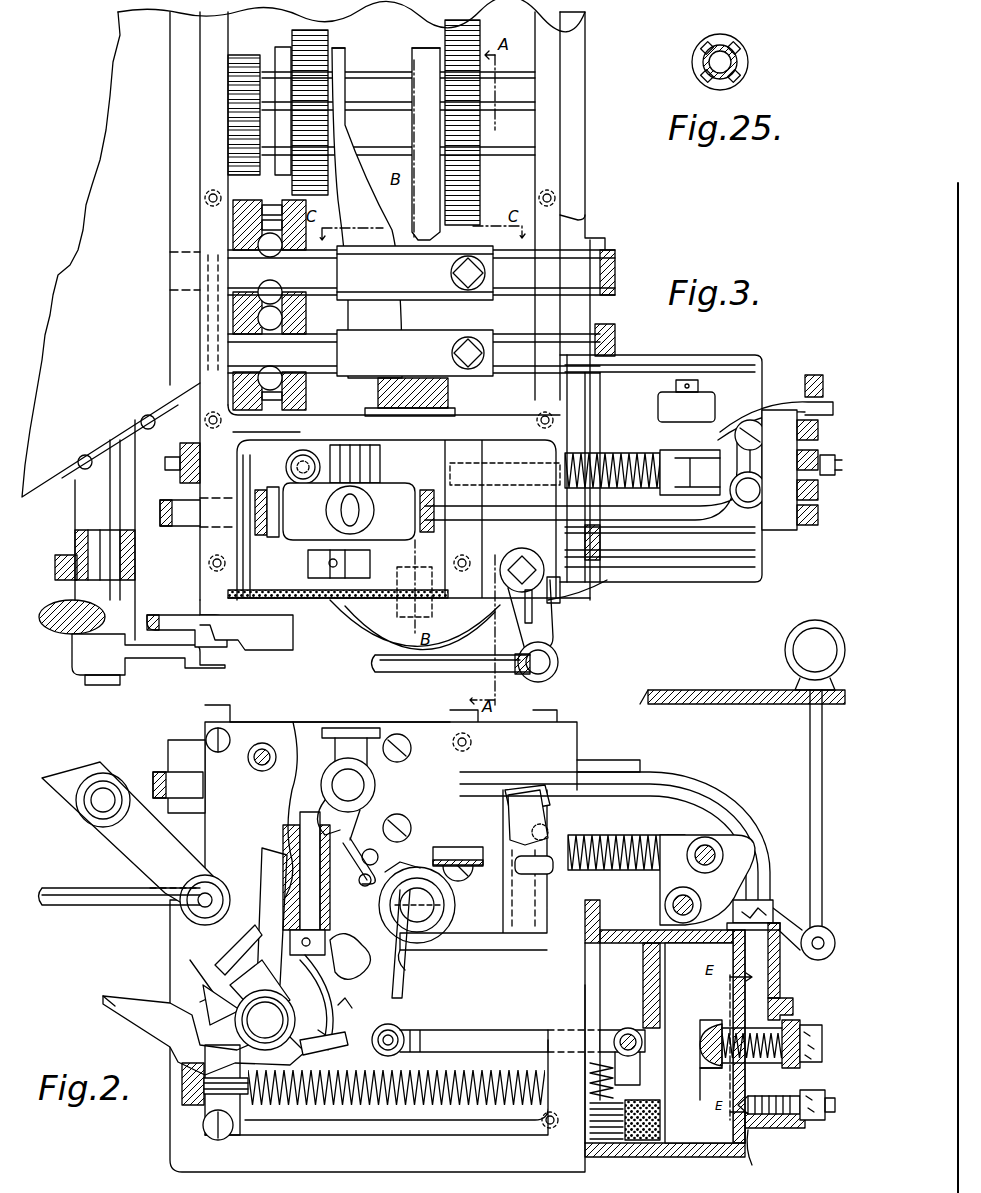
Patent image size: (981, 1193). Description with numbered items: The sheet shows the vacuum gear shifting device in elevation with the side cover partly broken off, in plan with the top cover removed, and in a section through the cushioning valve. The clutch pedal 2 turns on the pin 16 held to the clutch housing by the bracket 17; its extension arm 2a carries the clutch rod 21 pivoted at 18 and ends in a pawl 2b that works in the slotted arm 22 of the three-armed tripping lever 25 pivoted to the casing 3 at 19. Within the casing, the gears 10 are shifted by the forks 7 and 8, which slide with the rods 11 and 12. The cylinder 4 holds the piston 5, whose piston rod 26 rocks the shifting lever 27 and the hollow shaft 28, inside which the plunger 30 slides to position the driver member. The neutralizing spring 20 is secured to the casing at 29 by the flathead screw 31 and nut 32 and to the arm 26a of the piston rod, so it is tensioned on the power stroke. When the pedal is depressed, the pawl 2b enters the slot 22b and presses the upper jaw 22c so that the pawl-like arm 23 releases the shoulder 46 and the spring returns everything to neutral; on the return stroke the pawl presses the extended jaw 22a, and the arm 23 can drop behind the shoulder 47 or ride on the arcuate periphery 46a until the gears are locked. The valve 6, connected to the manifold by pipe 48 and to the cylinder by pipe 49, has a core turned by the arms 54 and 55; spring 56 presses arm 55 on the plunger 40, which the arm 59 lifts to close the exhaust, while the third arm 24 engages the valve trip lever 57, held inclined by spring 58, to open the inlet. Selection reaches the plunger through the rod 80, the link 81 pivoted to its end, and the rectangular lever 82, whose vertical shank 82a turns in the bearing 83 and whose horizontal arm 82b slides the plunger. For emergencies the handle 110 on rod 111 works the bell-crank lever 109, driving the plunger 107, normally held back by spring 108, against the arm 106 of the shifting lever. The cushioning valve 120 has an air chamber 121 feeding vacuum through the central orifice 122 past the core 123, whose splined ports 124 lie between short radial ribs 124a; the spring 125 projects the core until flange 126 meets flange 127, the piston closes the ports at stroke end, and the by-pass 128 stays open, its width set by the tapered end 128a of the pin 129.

In FIG. 3, the clutch pedal 2 is at (38, 614).
In FIG. 2, the clutch pedal 2 is at (48, 800).
In FIG. 3, the extension arm 2a is at (160, 660).
In FIG. 2, the extension arm 2a is at (135, 876).
In FIG. 2, the pawl 2b is at (190, 975).
In FIG. 3, the casing 3 is at (585, 225).
In FIG. 2, the casing 3 is at (282, 722).
In FIG. 3, the cylinder 4 is at (676, 582).
In FIG. 2, the cylinder 4 is at (670, 1160).
In FIG. 2, the piston 5 is at (665, 1050).
In FIG. 3, the valve 6 is at (349, 511).
In FIG. 2, the valve 6 is at (325, 752).
In FIG. 3, the fork 7 is at (360, 200).
In FIG. 3, the fork 8 is at (440, 232).
In FIG. 3, the gears 10 is at (328, 40).
In FIG. 3, the rod 11 is at (615, 272).
In FIG. 3, the rod 12 is at (612, 330).
In FIG. 3, the pin 16 is at (88, 543).
In FIG. 3, the bracket 17 is at (55, 583).
In FIG. 2, the pivot 18 is at (180, 918).
In FIG. 3, the pivot 19 is at (293, 612).
In FIG. 2, the pivot 19 is at (265, 1020).
In FIG. 2, the neutralizing spring 20 is at (322, 1100).
In FIG. 3, the rod 21 is at (165, 615).
In FIG. 2, the rod 21 is at (80, 908).
In FIG. 2, the slotted arm 22 is at (222, 1050).
In FIG. 2, the extended jaw 22a is at (127, 1017).
In FIG. 2, the slot 22b is at (221, 1005).
In FIG. 2, the upper jaw 22c is at (260, 990).
In FIG. 2, the pawl-like arm 23 is at (324, 1043).
In FIG. 2, the third arm 24 is at (272, 916).
In FIG. 2, the three-armed tripping lever 25 is at (250, 945).
In FIG. 2, the piston rod 26 is at (490, 1030).
In FIG. 2, the arm 26a is at (600, 1055).
In FIG. 2, the shifting lever 27 is at (415, 1002).
In FIG. 2, the shaft 28 is at (445, 900).
In FIG. 2, the attachment point 29 is at (208, 1118).
In FIG. 2, the plunger 30 is at (393, 905).
In FIG. 2, the flathead screw 31 is at (236, 1094).
In FIG. 2, the nut 32 is at (182, 1105).
In FIG. 3, the plunger 40 is at (290, 468).
In FIG. 2, the plunger 40 is at (298, 850).
In FIG. 2, the shoulder 46 is at (326, 995).
In FIG. 2, the arcuate periphery 46a is at (317, 1030).
In FIG. 2, the shoulder 47 is at (350, 1008).
In FIG. 3, the pipe 48 is at (175, 530).
In FIG. 2, the pipe 48 is at (162, 770).
In FIG. 3, the pipe 49 is at (535, 555).
In FIG. 2, the pipe 49 is at (680, 772).
In FIG. 3, the arm 54 is at (370, 565).
In FIG. 2, the arm 54 is at (362, 858).
In FIG. 3, the arm 55 is at (351, 464).
In FIG. 3, the spring 56 is at (348, 440).
In FIG. 2, the valve trip lever 57 is at (354, 886).
In FIG. 2, the spring 58 is at (358, 864).
In FIG. 2, the arm 59 is at (350, 957).
In FIG. 3, the rod 80 is at (412, 678).
In FIG. 3, the lever 81 is at (554, 632).
In FIG. 2, the lever 81 is at (510, 830).
In FIG. 2, the rectangular lever 82 is at (547, 935).
In FIG. 2, the vertical shank 82a is at (520, 785).
In FIG. 2, the horizontal arm 82b is at (500, 950).
In FIG. 2, the bearing 83 is at (553, 892).
In FIG. 2, the arm 106 is at (445, 868).
In FIG. 3, the plunger 107 is at (648, 448).
In FIG. 2, the plunger 107 is at (458, 847).
In FIG. 3, the spring 108 is at (608, 453).
In FIG. 2, the spring 108 is at (614, 828).
In FIG. 3, the bell-crank lever 109 is at (740, 415).
In FIG. 2, the bell-crank lever 109 is at (718, 900).
In FIG. 2, the handle 110 is at (795, 625).
In FIG. 2, the rod 111 is at (810, 765).
In FIG. 3, the cushioning valve 120 is at (785, 530).
In FIG. 2, the cushioning valve 120 is at (795, 1005).
In FIG. 2, the air chamber 121 is at (782, 975).
In FIG. 2, the central orifice 122 is at (722, 1070).
In FIG. 25, the core 123 is at (748, 62).
In FIG. 2, the core 123 is at (718, 1026).
In FIG. 25, the splined ports 124 is at (728, 50).
In FIG. 2, the splined ports 124 is at (744, 1030).
In FIG. 25, the short radial ribs 124a is at (705, 75).
In FIG. 2, the short radial ribs 124a is at (714, 1024).
In FIG. 2, the spring 125 is at (722, 1066).
In FIG. 2, the flange 126 is at (822, 1070).
In FIG. 2, the flange 127 is at (774, 1053).
In FIG. 2, the by-pass 128 is at (735, 1118).
In FIG. 2, the tapered end 128a is at (760, 1157).
In FIG. 2, the pin 129 is at (780, 1128).